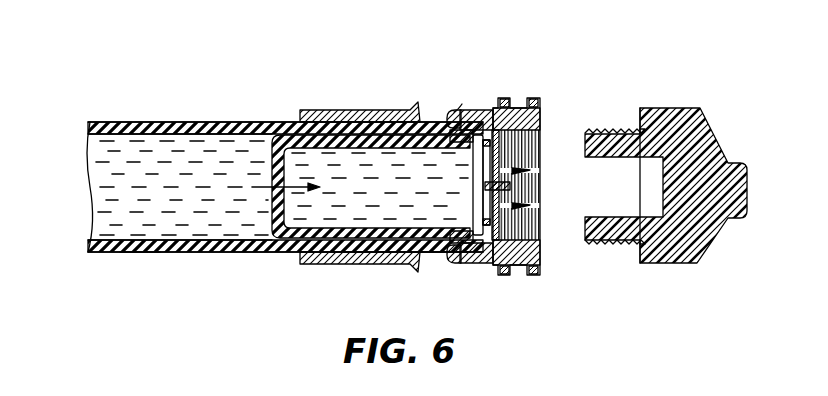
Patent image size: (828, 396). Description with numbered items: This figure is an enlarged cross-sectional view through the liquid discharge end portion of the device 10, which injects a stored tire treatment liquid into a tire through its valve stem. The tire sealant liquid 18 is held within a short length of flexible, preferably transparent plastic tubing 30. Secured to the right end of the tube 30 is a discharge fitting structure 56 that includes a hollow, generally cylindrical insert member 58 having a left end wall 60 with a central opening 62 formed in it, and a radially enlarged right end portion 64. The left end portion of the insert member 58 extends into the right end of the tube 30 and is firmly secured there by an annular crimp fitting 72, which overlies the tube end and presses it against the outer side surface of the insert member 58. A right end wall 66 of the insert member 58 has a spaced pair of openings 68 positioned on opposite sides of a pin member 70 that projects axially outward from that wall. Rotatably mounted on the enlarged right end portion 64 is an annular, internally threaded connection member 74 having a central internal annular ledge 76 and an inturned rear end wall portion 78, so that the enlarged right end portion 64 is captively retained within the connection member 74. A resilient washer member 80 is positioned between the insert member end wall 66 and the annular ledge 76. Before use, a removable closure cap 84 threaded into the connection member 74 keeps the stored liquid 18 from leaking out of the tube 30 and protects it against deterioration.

The device 10 is at (210, 78).
The tire sealant liquid 18 is at (113, 121).
The plastic tubing 30 is at (135, 253).
The discharge fitting structure 56 is at (465, 96).
The insert member 58 is at (436, 262).
The left end wall 60 is at (275, 150).
The central opening 62 is at (265, 188).
The radially enlarged right end portion 64 is at (478, 110).
The right end wall 66 is at (473, 163).
The openings 68 is at (484, 200).
The pin member 70 is at (510, 186).
The annular crimp fitting 72 is at (362, 110).
The connection member 74 is at (527, 272).
The internal annular ledge 76 is at (540, 112).
The inturned rear end wall portion 78 is at (452, 108).
The resilient washer member 80 is at (490, 258).
The removable closure cap 84 is at (664, 263).